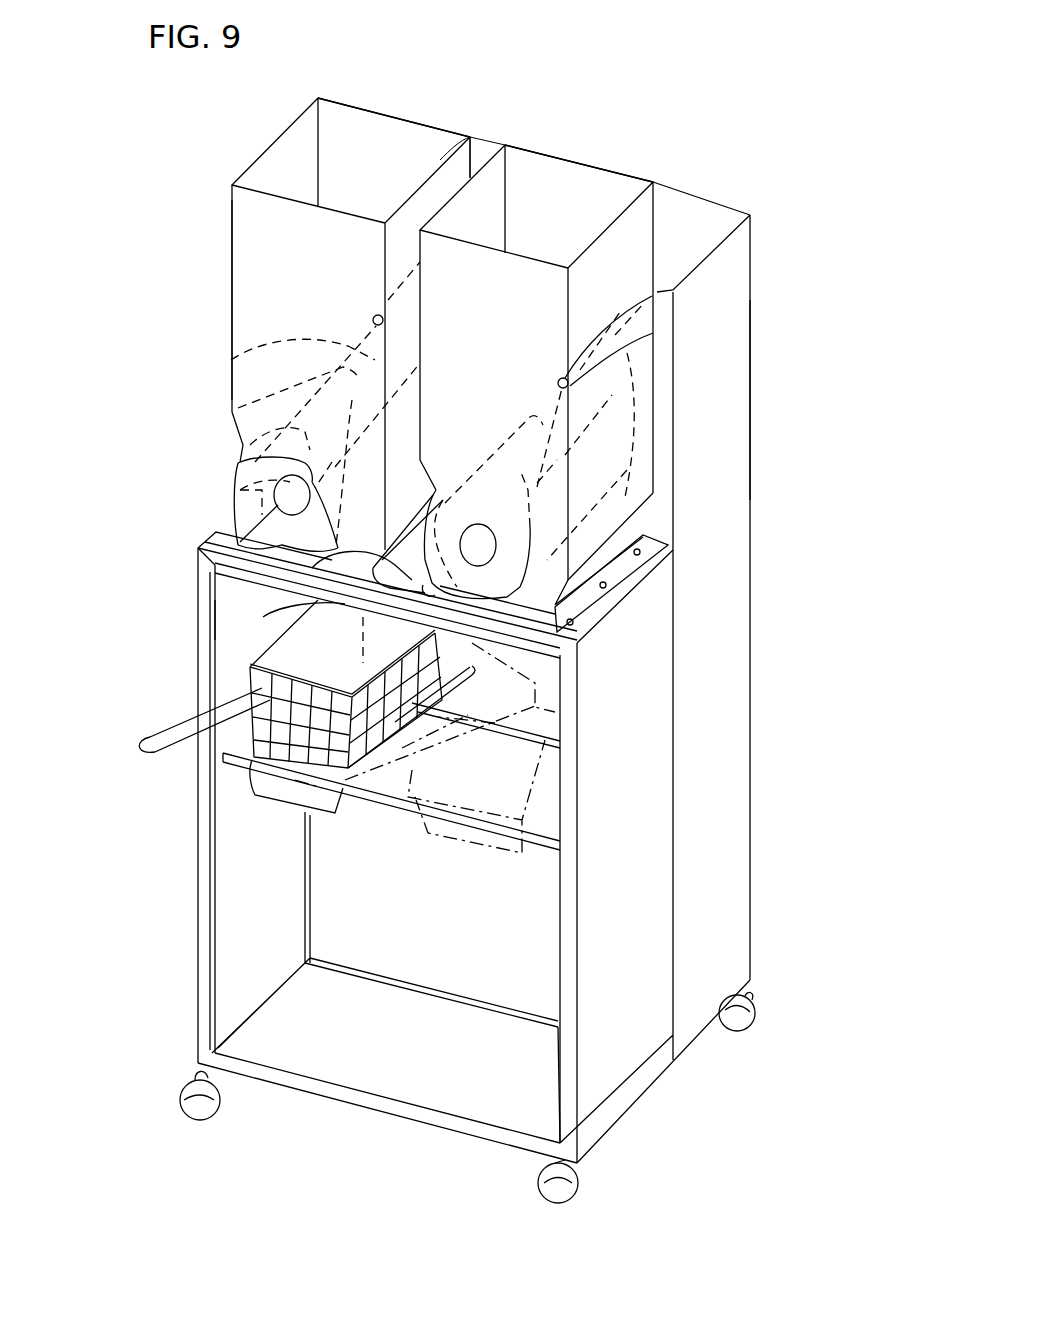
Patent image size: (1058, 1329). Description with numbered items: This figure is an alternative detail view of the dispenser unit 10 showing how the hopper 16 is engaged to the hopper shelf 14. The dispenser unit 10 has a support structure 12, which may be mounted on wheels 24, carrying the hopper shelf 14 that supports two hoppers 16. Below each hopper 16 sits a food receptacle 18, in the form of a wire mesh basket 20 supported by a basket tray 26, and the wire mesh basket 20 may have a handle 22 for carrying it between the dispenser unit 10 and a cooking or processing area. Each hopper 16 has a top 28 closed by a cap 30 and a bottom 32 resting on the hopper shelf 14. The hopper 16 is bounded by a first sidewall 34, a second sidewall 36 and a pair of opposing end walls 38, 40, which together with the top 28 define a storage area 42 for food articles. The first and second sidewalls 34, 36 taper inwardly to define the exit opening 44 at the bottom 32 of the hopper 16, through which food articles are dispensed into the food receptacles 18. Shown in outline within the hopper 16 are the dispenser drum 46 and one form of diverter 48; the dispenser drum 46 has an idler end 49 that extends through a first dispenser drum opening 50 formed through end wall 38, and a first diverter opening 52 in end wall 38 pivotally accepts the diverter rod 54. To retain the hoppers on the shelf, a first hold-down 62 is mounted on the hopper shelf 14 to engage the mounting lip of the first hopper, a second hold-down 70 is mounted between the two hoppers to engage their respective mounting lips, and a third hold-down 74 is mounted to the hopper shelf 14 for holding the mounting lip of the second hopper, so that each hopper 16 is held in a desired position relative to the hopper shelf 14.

The dispenser unit 10 is at (808, 415).
The support structure 12 is at (752, 524).
The hopper shelf 14 is at (200, 552).
The hopper 16 is at (488, 170).
The food receptacle 18 is at (295, 645).
The wire mesh basket 20 is at (263, 690).
The handle 22 is at (135, 740).
The wheels 24 is at (185, 1090).
The basket tray 26 is at (256, 788).
The top 28 is at (230, 222).
The cap 30 is at (314, 118).
The bottom 32 is at (233, 500).
The first sidewall 34 is at (232, 377).
The second sidewall 36 is at (533, 198).
The end wall 38 is at (257, 255).
The end wall 40 is at (395, 120).
The storage area 42 is at (232, 410).
The exit opening 44 is at (232, 493).
The dispenser drum 46 is at (250, 448).
The diverter 48 is at (258, 350).
The idler end 49 is at (218, 612).
The first dispenser drum opening 50 is at (247, 457).
The first diverter opening 52 is at (378, 320).
The diverter rod 54 is at (378, 316).
The first hold-down 62 is at (200, 548).
The second hold-down 70 is at (263, 617).
The third hold-down 74 is at (622, 570).